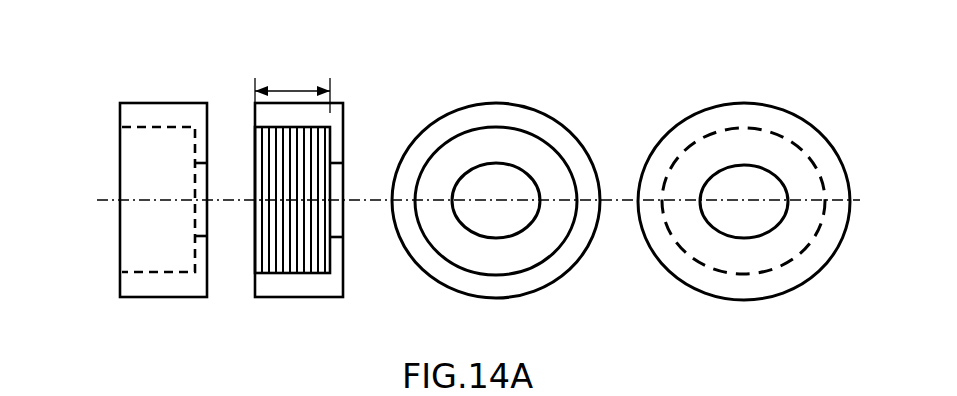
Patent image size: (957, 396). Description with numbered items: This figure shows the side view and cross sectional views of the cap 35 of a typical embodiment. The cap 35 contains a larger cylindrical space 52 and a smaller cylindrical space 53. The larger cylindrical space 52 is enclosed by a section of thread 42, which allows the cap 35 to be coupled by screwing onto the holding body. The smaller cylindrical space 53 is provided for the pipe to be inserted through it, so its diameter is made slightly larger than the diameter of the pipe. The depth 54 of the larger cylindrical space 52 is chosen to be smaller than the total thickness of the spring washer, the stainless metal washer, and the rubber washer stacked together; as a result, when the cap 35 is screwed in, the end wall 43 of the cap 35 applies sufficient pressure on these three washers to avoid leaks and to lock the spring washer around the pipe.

The cap 35 is at (832, 150).
The section of thread 42 is at (255, 238).
The end wall 43 is at (347, 135).
The larger cylindrical space 52 is at (117, 200).
The smaller cylindrical space 53 is at (500, 202).
The depth 54 is at (293, 91).